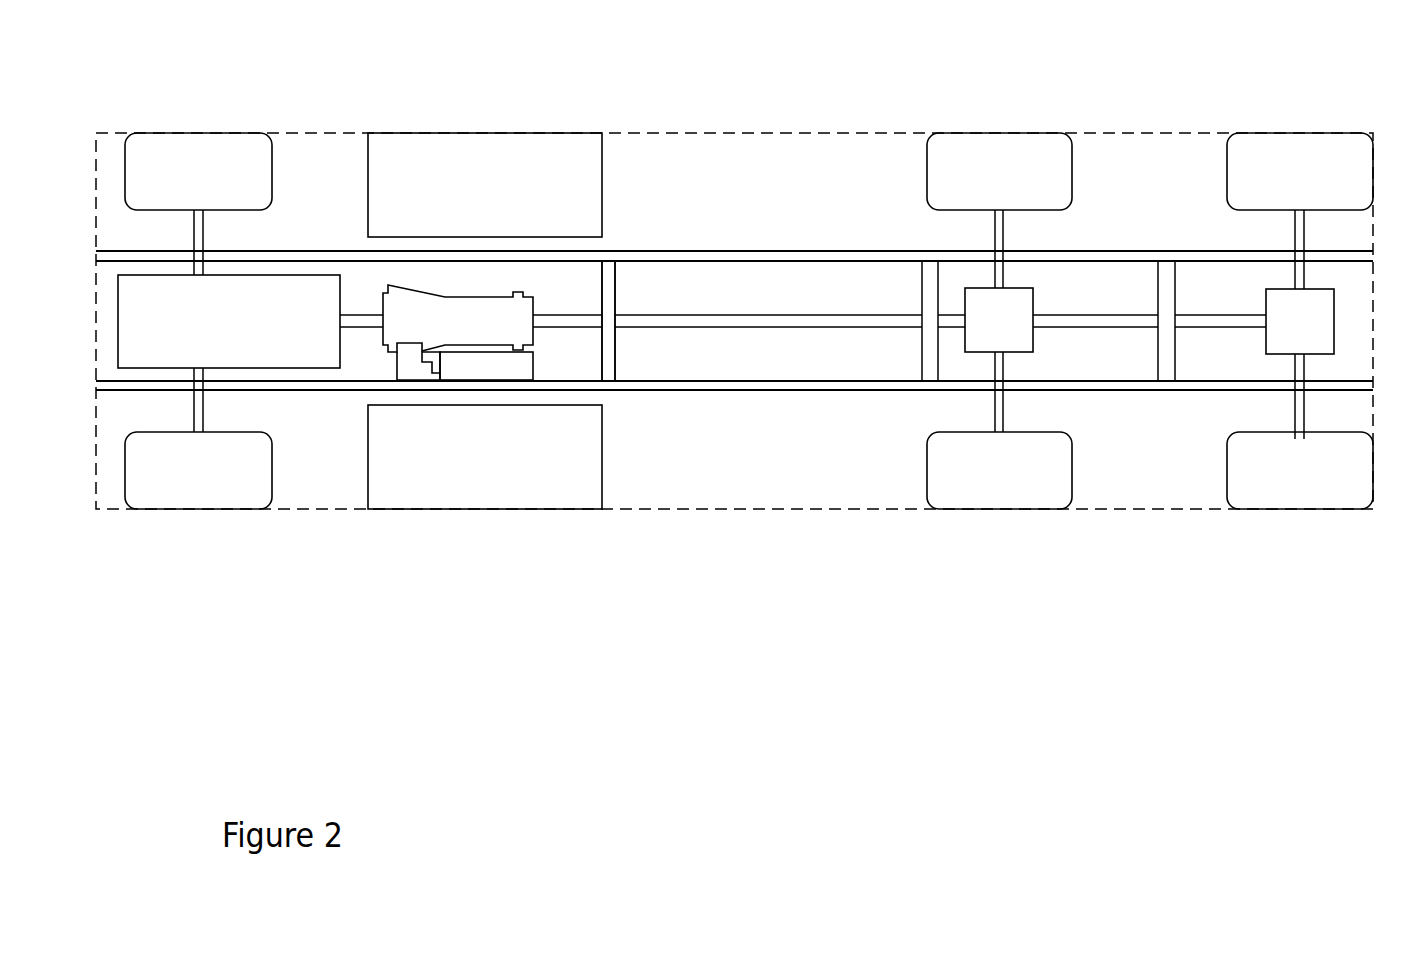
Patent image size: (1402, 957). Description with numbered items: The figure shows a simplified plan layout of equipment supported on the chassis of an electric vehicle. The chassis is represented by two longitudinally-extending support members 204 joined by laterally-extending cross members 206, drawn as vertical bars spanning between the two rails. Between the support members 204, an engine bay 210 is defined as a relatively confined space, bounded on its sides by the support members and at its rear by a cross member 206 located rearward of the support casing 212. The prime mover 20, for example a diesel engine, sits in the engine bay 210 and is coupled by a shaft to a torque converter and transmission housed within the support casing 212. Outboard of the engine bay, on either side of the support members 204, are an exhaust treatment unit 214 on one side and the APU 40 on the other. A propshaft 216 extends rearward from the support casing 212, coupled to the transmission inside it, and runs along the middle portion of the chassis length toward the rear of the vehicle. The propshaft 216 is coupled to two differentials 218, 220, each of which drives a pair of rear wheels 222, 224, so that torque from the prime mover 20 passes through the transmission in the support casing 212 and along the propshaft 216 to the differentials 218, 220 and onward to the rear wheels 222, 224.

The prime mover 20 is at (233, 343).
The APU 40 is at (504, 463).
The longitudinally-extending support members 204 is at (757, 250).
The cross members 206 is at (610, 287).
The engine bay 210 is at (353, 363).
The support casing 212 is at (415, 297).
The exhaust treatment unit 214 is at (542, 150).
The propshaft 216 is at (668, 322).
The differential 218 is at (1020, 343).
The differential 220 is at (1284, 306).
The rear wheels 222 is at (972, 173).
The rear wheels 224 is at (1259, 160).